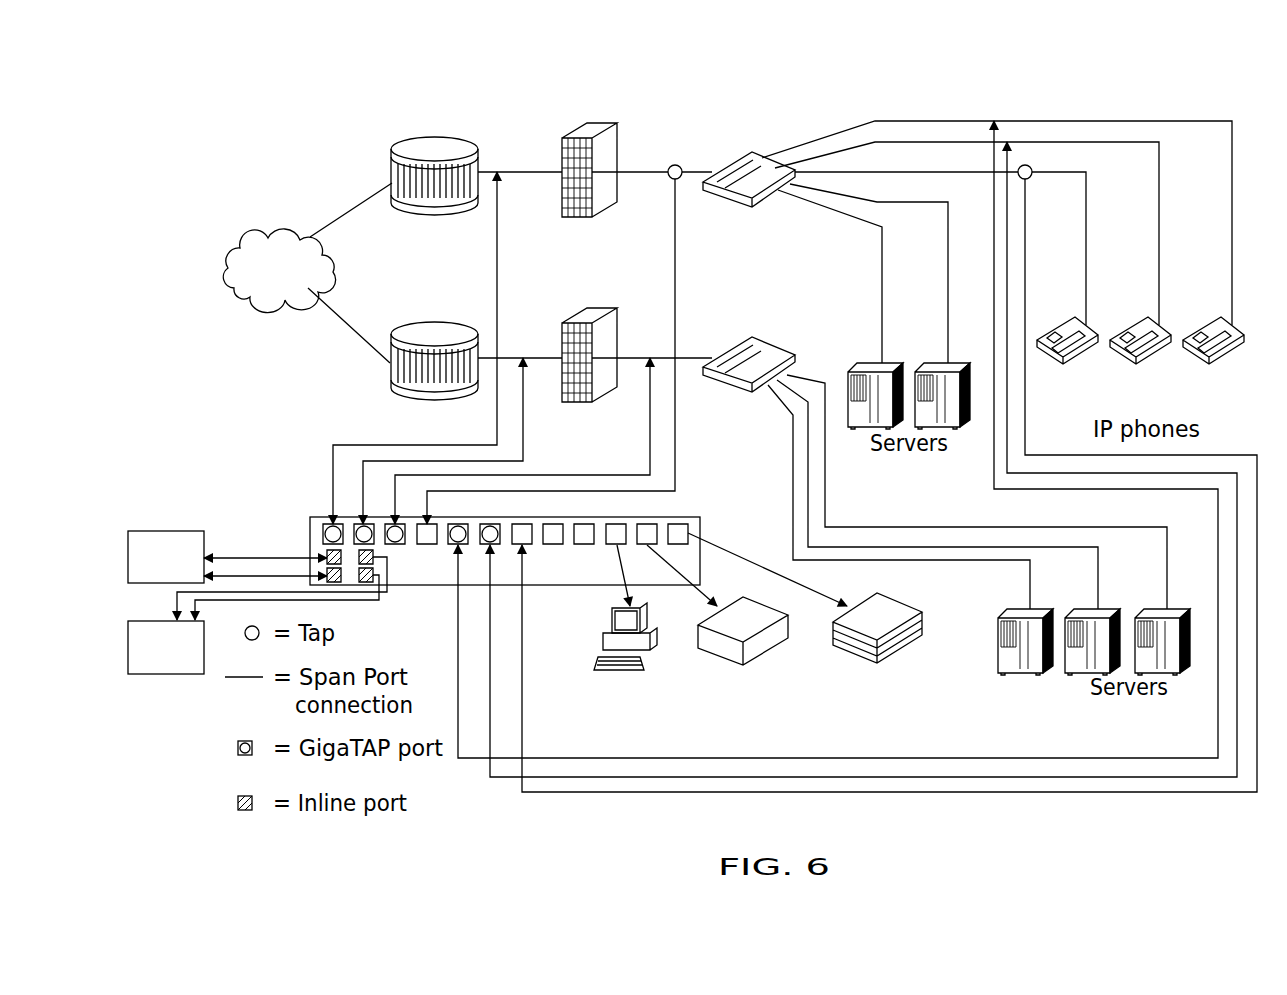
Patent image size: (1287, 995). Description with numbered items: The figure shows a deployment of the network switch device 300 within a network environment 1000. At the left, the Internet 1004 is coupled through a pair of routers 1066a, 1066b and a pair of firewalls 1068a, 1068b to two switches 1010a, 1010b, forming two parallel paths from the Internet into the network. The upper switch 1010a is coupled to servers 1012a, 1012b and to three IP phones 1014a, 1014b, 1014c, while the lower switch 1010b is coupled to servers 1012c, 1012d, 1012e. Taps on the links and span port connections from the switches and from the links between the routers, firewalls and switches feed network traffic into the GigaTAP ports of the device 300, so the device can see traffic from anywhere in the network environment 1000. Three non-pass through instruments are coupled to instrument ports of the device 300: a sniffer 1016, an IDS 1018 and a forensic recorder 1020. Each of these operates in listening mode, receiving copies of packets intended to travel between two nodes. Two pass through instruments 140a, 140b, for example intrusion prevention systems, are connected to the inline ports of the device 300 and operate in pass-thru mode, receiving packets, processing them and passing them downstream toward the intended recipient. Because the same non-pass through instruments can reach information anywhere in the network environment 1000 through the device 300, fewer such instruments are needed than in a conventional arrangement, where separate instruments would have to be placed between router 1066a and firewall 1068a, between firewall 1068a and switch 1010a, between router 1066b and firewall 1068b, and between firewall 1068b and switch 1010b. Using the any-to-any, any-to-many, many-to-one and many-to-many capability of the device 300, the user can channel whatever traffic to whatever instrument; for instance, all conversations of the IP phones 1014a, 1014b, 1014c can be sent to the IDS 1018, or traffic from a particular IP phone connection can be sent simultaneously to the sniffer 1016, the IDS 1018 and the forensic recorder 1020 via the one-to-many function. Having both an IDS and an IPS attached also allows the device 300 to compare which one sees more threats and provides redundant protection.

The network environment 1000 is at (1101, 55).
The Internet 1004 is at (280, 233).
The router 1066a is at (433, 137).
The router 1066b is at (433, 322).
The firewall 1068a is at (578, 133).
The firewall 1068b is at (578, 318).
The switch 1010a is at (741, 157).
The switch 1010b is at (741, 342).
The server 1012a is at (849, 430).
The server 1012b is at (958, 430).
The server 1012c is at (1010, 675).
The server 1012d is at (1080, 675).
The server 1012e is at (1185, 675).
The IP phone 1014a is at (1063, 357).
The IP phone 1014b is at (1136, 357).
The IP phone 1014c is at (1222, 352).
The network switch device 300 is at (310, 524).
The pass through instrument 140a is at (128, 552).
The pass through instrument 140b is at (128, 640).
The sniffer 1016 is at (606, 616).
The IDS 1018 is at (716, 658).
The forensic recorder 1020 is at (836, 648).